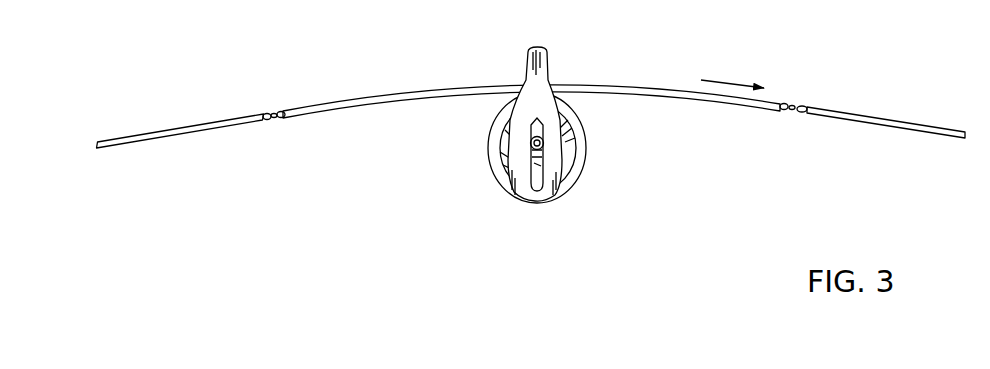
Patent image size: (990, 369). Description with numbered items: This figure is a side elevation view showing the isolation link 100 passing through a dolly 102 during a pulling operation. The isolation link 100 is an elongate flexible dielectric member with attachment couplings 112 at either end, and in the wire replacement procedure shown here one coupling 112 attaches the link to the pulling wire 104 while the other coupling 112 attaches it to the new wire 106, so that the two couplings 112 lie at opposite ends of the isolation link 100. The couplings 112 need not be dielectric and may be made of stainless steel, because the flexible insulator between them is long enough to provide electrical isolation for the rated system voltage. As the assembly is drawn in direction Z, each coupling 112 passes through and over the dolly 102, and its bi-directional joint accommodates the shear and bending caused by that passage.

The isolation link 100 is at (615, 47).
The dolly 102 is at (474, 139).
The pulling wire 104 is at (896, 146).
The new wire 106 is at (146, 157).
The attachment coupling 112 is at (271, 96).